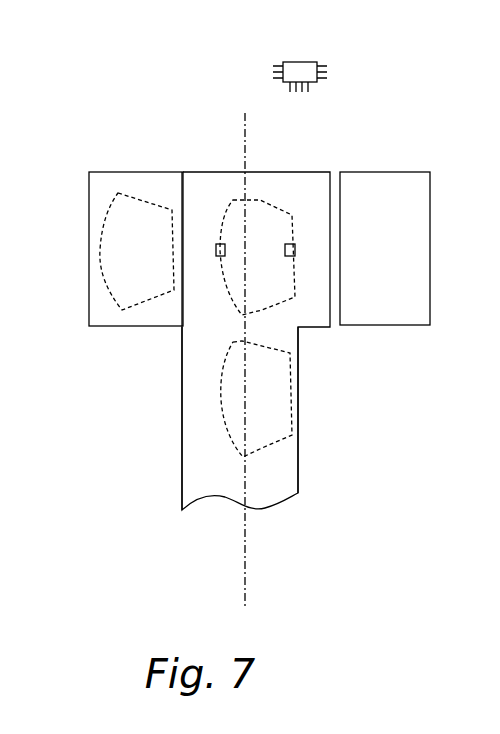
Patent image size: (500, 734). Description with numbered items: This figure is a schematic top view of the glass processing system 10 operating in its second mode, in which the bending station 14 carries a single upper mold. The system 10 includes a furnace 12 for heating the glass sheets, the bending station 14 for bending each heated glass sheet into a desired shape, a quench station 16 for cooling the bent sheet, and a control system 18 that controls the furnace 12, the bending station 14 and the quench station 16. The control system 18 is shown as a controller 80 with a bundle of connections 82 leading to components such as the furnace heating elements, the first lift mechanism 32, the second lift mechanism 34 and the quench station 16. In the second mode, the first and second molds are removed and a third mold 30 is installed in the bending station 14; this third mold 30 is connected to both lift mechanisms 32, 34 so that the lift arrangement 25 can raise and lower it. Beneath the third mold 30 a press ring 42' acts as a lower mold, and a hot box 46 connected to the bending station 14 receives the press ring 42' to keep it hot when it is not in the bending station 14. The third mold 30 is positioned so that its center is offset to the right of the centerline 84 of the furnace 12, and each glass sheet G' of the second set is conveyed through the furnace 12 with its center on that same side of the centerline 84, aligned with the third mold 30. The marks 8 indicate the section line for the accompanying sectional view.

The glass processing system 10 is at (90, 473).
The furnace 12 is at (157, 415).
The bending station 14 is at (311, 341).
The quench station 16 is at (398, 333).
The control system 18 is at (323, 64).
The lift arrangement 25 is at (298, 250).
The third mold 30 is at (260, 200).
The first lift mechanism 32 is at (219, 244).
The second lift mechanism 34 is at (291, 244).
The press ring 42' is at (131, 203).
The hot box 46 is at (140, 332).
The controller 80 is at (296, 62).
The connections 82 is at (323, 97).
The centerline 84 is at (243, 582).
The section line 8- 8 is at (89, 257).
The glass sheet G' is at (210, 402).